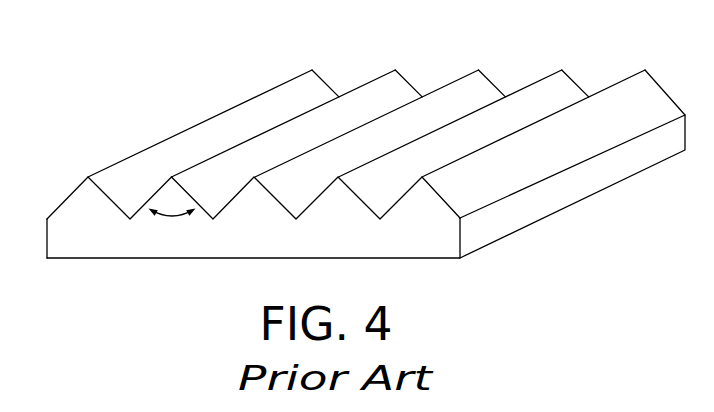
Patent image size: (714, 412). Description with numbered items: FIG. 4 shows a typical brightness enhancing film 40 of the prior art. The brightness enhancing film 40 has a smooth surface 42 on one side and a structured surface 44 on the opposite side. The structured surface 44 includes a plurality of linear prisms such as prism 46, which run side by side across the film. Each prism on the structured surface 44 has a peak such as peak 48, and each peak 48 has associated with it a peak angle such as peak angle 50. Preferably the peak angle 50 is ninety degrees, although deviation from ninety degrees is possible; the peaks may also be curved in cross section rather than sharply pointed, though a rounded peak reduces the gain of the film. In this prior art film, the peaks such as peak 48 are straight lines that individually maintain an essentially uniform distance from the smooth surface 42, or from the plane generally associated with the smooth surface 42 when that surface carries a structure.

The brightness enhancing film 40 is at (357, 168).
The smooth surface 42 is at (226, 258).
The structured surface 44 is at (152, 196).
The prism 46 is at (87, 208).
The peak 48 is at (356, 89).
The peak angle 50 is at (172, 216).